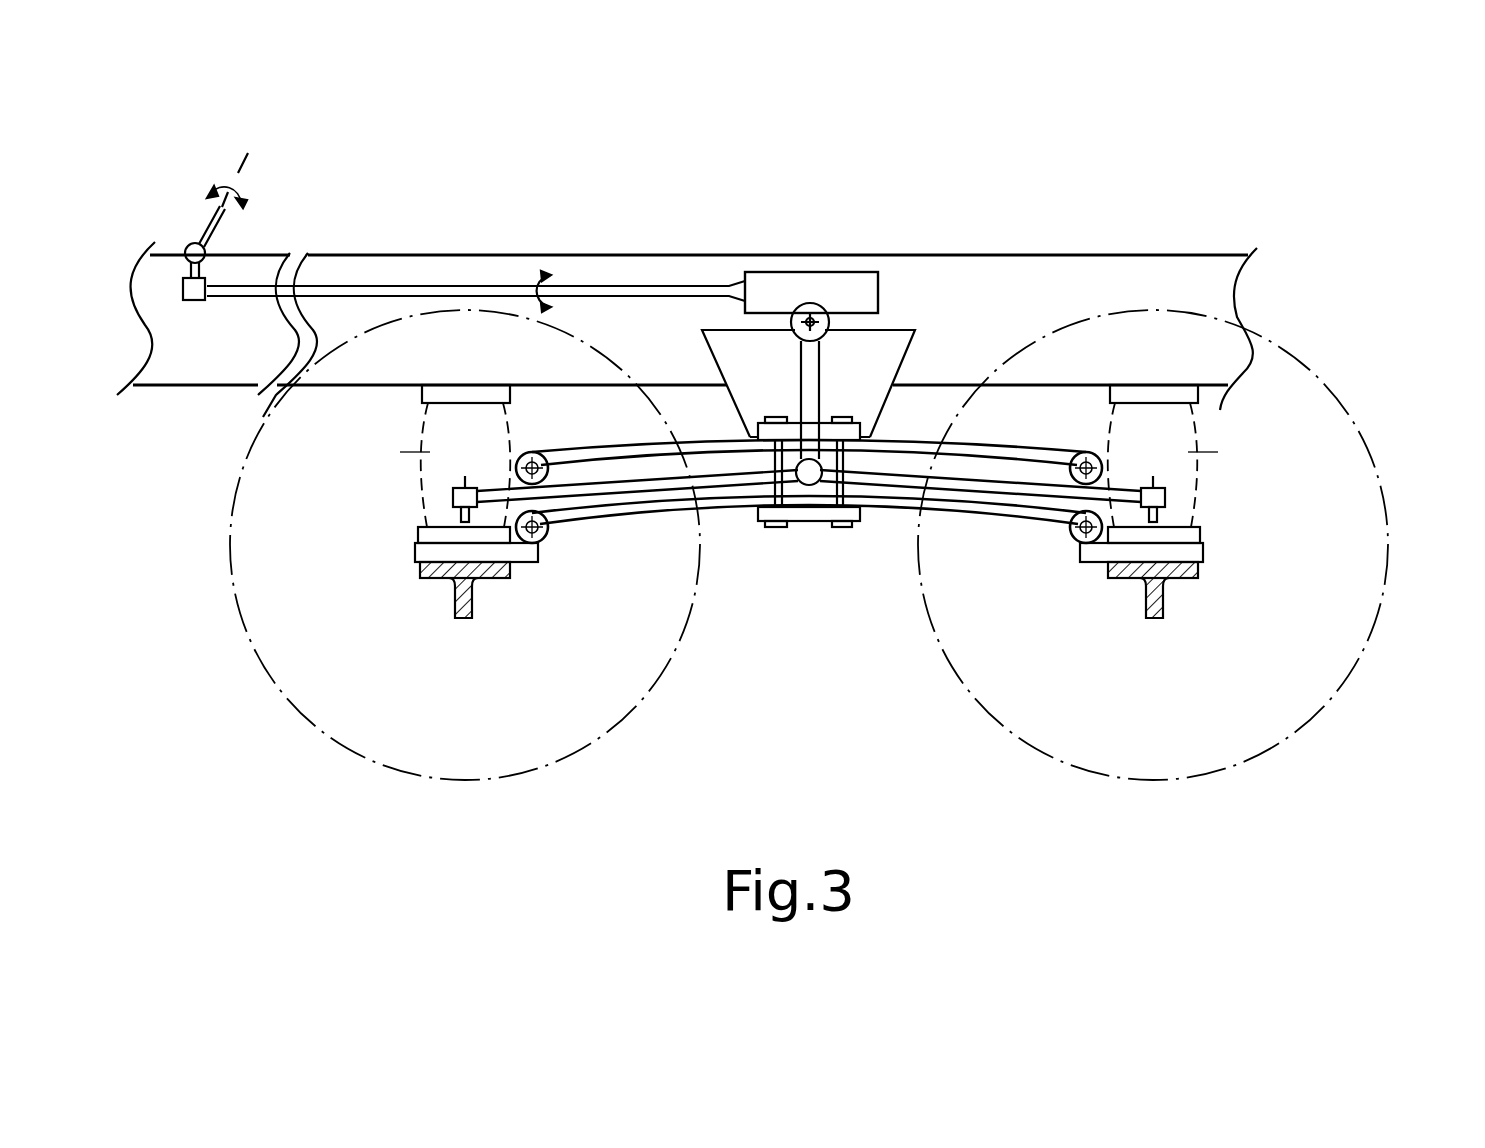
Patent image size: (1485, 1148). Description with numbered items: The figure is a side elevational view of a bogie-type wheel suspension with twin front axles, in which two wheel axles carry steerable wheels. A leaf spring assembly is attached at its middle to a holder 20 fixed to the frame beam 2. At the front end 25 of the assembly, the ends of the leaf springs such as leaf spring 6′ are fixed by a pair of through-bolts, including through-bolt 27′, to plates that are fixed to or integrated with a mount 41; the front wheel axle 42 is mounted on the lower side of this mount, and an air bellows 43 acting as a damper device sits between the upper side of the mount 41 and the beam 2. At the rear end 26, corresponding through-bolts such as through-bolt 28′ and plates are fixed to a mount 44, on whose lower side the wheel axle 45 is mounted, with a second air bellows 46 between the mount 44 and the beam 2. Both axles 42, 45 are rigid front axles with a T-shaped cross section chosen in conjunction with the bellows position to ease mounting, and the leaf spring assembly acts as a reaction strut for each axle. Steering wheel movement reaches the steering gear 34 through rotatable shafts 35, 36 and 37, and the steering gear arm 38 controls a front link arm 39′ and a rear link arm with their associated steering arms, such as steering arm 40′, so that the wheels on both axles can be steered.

The beam 2 is at (1057, 273).
The holder 20 is at (868, 363).
The front end of the leaf spring assembly 25 is at (500, 448).
The rear end of the leaf spring assembly 26 is at (1118, 453).
The through-bolt 27′ is at (548, 478).
The through-bolt 28′ is at (1065, 483).
The steering gear 34 is at (793, 287).
The rotatable shaft 35 is at (213, 232).
The rotatable shaft 36 is at (201, 272).
The rotatable shaft 37 is at (410, 291).
The steering gear arm 38 is at (808, 387).
The front link arm 39′ is at (696, 493).
The steering arm 40′ is at (453, 498).
The mount 41 is at (417, 552).
The front wheel axle 42 is at (457, 588).
The air bellows 43 is at (432, 453).
The mount 44 is at (1187, 552).
The front wheel axle 45 is at (1185, 582).
The air bellows 46 is at (1188, 455).
The leaf spring 6′ is at (865, 482).